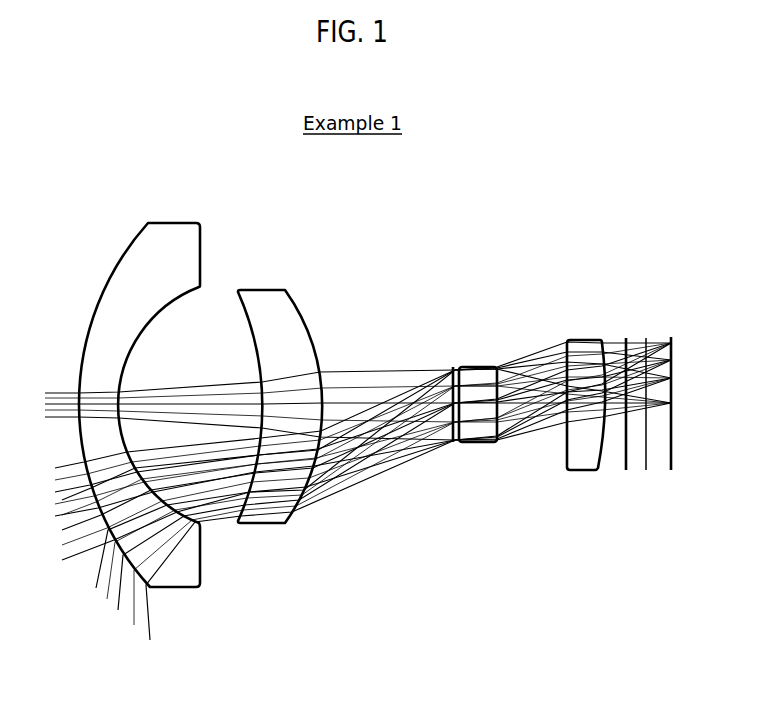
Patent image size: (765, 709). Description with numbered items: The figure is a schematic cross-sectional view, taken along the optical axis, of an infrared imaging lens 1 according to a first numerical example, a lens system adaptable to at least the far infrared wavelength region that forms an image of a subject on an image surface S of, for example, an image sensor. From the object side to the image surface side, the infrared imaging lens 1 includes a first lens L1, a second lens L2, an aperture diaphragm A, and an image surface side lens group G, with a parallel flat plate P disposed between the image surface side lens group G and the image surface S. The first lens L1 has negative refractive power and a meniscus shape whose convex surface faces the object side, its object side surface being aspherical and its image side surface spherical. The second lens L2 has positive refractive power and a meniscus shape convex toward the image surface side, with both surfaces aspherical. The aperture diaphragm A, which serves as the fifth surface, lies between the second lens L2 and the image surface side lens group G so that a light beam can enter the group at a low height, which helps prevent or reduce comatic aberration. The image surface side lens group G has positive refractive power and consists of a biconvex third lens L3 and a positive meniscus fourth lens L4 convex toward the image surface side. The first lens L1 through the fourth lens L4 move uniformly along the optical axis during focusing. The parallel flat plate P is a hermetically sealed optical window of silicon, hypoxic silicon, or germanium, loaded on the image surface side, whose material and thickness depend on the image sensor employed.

The infrared imaging lens 1 is at (613, 212).
The first lens L1 is at (174, 232).
The second lens L2 is at (263, 298).
The third lens L3 is at (478, 373).
The fourth lens L4 is at (585, 340).
The aperture diaphragm A is at (453, 367).
The image surface side lens group G is at (600, 292).
The parallel flat plate P is at (630, 338).
The image surface S is at (671, 337).